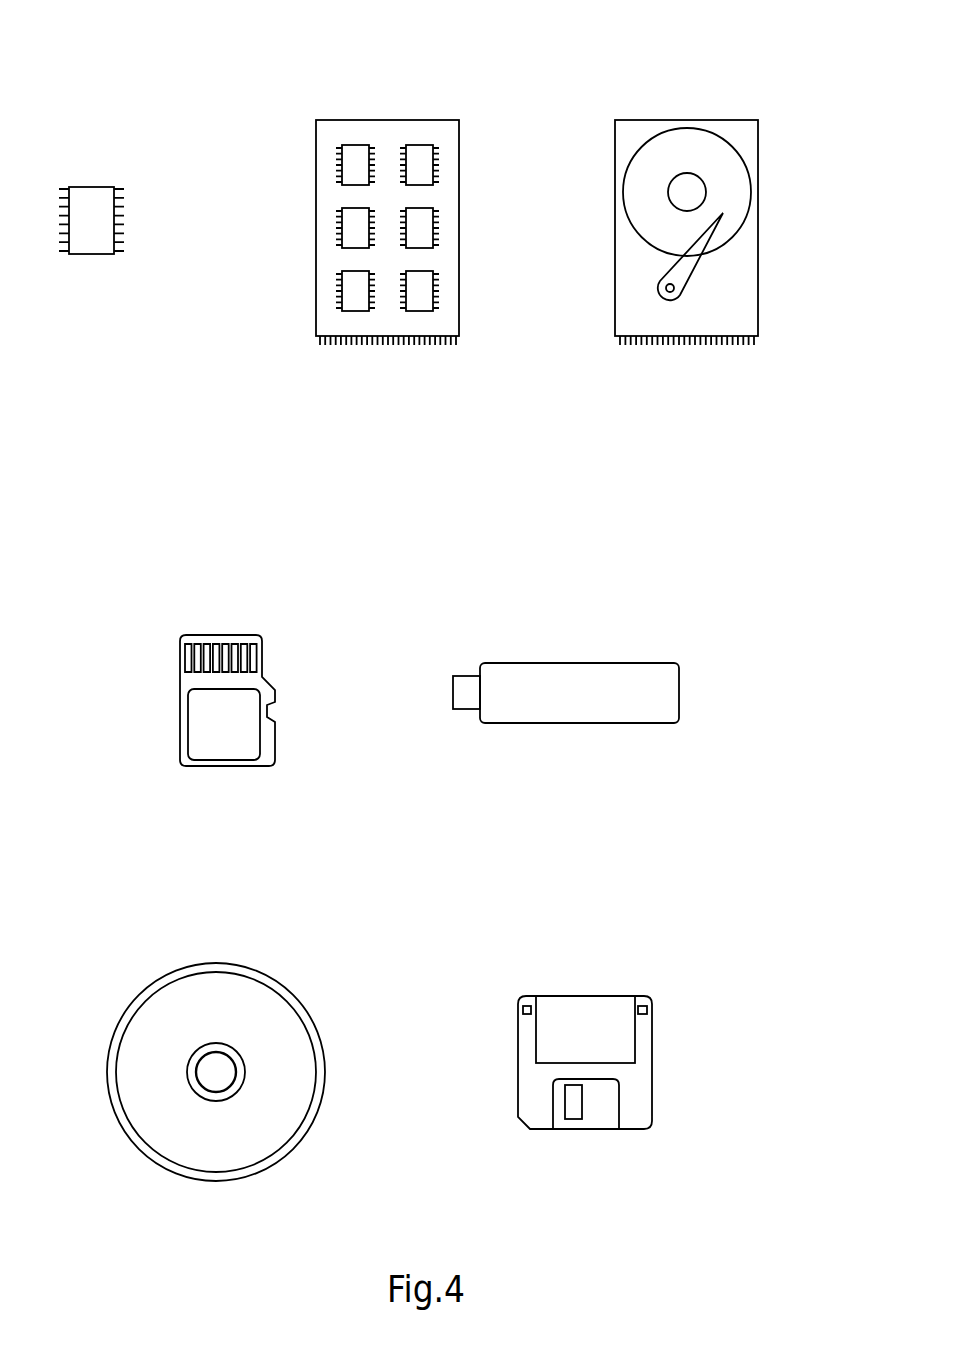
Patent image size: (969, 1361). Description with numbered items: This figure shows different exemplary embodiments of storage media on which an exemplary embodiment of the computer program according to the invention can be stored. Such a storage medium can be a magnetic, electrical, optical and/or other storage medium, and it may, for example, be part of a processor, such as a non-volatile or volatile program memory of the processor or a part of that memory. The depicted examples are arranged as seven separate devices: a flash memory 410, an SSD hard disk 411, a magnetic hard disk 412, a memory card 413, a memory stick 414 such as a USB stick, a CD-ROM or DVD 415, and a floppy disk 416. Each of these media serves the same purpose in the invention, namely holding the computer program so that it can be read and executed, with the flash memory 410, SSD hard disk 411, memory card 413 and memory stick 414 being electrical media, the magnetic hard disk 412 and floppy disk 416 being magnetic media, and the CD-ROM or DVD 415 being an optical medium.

The flash memory 410 is at (120, 145).
The SSD hard disk 411 is at (462, 78).
The magnetic hard disk 412 is at (762, 78).
The memory card 413 is at (265, 600).
The memory stick 414 is at (652, 623).
The CD-ROM or DVD 415 is at (304, 955).
The floppy disk 416 is at (647, 955).